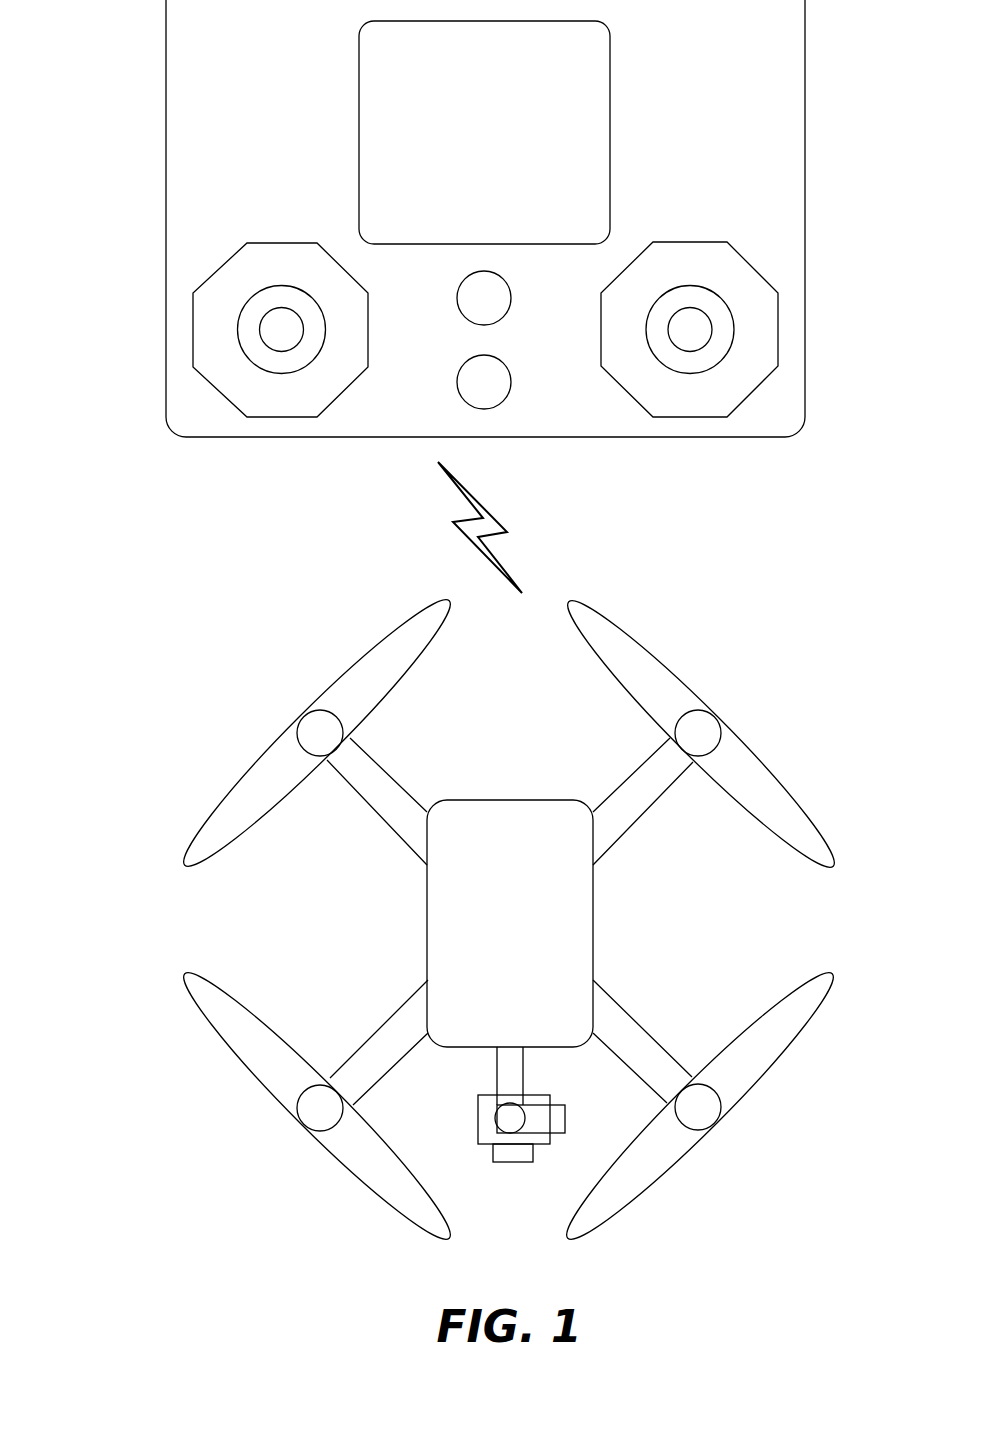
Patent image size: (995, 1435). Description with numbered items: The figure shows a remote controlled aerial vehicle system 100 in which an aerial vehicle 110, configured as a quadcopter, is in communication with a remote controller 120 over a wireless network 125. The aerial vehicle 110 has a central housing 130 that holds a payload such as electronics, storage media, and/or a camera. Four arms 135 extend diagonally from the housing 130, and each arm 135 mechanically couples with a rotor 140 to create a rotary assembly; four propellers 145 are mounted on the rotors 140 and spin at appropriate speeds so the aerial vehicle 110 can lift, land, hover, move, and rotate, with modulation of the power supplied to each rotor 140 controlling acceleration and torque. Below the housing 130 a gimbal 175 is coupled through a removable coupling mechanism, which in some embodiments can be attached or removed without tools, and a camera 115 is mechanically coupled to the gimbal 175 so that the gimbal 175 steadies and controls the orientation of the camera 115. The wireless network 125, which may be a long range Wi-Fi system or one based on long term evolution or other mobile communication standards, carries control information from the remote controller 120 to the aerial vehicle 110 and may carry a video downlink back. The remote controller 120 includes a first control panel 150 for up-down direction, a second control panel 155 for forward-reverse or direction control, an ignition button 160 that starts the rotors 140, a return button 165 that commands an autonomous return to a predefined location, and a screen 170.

The system 100 is at (819, 624).
The aerial vehicle 110 is at (125, 602).
The camera 115 is at (540, 1138).
The remote controller 120 is at (122, 433).
The wireless network 125 is at (499, 527).
The housing 130 is at (510, 923).
The arms 135 is at (407, 788).
The rotors 140 is at (318, 728).
The propellers 145 is at (225, 795).
The first control panel 150 is at (282, 330).
The second control panel 155 is at (690, 330).
The ignition button 160 is at (484, 298).
The return button 165 is at (484, 382).
The screen 170 is at (484, 132).
The gimbal 175 is at (515, 1077).